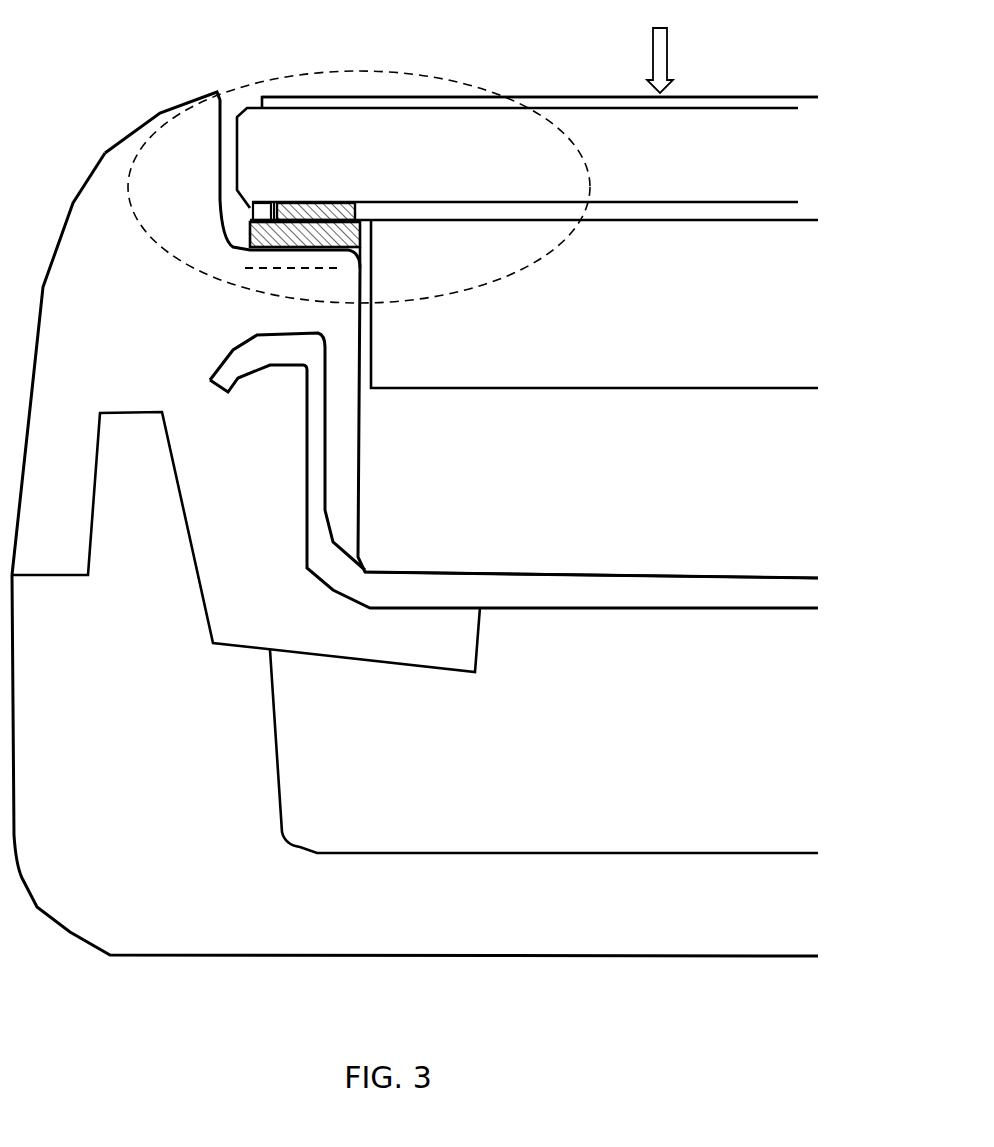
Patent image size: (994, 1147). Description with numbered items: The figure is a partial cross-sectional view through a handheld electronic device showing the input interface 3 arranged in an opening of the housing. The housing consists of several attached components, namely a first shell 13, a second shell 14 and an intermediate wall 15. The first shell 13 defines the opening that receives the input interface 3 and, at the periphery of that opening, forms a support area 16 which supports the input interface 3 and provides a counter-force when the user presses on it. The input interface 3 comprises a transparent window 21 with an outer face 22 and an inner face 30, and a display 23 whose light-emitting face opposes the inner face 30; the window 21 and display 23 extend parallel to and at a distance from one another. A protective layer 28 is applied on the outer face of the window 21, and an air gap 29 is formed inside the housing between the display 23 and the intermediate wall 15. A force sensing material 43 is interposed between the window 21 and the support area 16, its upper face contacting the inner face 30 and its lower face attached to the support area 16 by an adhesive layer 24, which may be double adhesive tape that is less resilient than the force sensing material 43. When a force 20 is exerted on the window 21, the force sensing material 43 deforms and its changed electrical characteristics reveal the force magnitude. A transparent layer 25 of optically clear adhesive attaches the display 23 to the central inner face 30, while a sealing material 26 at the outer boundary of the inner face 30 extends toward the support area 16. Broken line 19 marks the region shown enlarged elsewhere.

The input interface 3 is at (772, 58).
The first shell 13 is at (105, 153).
The second shell 14 is at (70, 932).
The intermediate wall 15 is at (690, 610).
The support area 16 is at (297, 260).
The broken line 19 is at (465, 83).
The force 20 is at (665, 65).
The transparent window 21 is at (655, 171).
The outer face 22 is at (800, 108).
The display 23 is at (657, 313).
The adhesive layer 24 is at (255, 238).
The transparent layer 25 is at (813, 209).
The sealing material 26 is at (250, 210).
The protective layer 28 is at (808, 100).
The air gap 29 is at (662, 486).
The inner face 30 is at (800, 202).
The force sensing material 43 is at (302, 203).